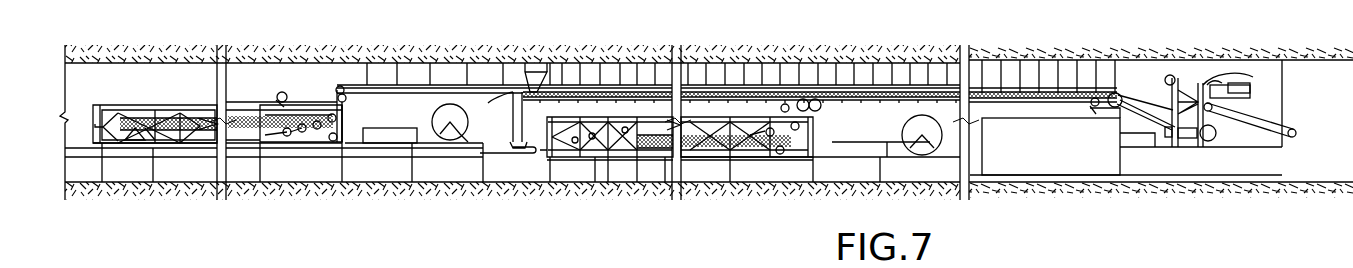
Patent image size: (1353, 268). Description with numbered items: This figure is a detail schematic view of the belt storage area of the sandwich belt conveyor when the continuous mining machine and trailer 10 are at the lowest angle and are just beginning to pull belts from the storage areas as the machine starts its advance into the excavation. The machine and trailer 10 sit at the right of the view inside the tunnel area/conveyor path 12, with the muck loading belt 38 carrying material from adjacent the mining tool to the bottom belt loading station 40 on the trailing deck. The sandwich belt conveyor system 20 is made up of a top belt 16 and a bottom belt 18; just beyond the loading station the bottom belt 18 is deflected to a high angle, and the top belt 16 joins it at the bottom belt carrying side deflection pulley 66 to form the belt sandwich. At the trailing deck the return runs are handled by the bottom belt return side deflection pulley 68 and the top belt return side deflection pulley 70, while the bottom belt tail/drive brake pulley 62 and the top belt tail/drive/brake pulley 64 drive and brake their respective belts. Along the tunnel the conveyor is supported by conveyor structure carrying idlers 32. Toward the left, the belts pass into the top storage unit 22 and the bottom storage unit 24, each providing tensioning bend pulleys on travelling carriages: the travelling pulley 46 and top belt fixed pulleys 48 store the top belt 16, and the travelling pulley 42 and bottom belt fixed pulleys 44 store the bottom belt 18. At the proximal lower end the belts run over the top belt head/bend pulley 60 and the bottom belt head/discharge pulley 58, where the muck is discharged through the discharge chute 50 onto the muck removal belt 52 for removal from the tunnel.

The continuous mining machine and trailer 10 is at (1005, 167).
The tunnel area/conveyor path 12 is at (838, 186).
The top belt 16 is at (207, 122).
The bottom belt 18 is at (623, 135).
The sandwich belt conveyor system 20 is at (1067, 102).
The top storage unit 22 is at (198, 173).
The bottom storage unit 24 is at (647, 173).
The carrying idlers 32 is at (907, 94).
The muck loading belt 38 is at (1258, 130).
The bottom belt loading station 40 is at (1140, 102).
The travelling pulley of the bottom belt storage area 42 is at (597, 150).
The bottom belt fixed pulleys 44 is at (762, 149).
The travelling pulley of the top belt storage area 46 is at (142, 135).
The top belt fixed pulleys 48 is at (305, 130).
The discharge chute 50 is at (517, 152).
The muck removal belt 52 is at (373, 160).
The bottom belt head/discharge pulley 58 is at (513, 100).
The top belt head/bend pulley 60 is at (336, 89).
The bottom belt tail/drive brake pulley 62 is at (1208, 140).
The top belt tail/drive/brake pulley 64 is at (1221, 73).
The bottom belt carrying side deflection pulley 66 is at (1115, 100).
The bottom belt return side deflection pulley 68 is at (1097, 105).
The top belt return side deflection pulley 70 is at (1165, 79).